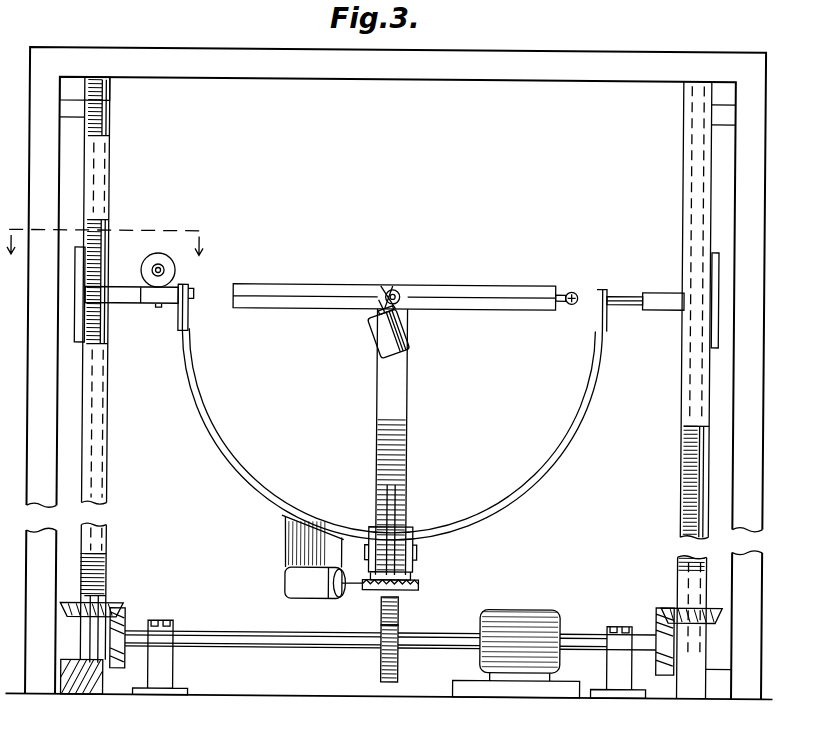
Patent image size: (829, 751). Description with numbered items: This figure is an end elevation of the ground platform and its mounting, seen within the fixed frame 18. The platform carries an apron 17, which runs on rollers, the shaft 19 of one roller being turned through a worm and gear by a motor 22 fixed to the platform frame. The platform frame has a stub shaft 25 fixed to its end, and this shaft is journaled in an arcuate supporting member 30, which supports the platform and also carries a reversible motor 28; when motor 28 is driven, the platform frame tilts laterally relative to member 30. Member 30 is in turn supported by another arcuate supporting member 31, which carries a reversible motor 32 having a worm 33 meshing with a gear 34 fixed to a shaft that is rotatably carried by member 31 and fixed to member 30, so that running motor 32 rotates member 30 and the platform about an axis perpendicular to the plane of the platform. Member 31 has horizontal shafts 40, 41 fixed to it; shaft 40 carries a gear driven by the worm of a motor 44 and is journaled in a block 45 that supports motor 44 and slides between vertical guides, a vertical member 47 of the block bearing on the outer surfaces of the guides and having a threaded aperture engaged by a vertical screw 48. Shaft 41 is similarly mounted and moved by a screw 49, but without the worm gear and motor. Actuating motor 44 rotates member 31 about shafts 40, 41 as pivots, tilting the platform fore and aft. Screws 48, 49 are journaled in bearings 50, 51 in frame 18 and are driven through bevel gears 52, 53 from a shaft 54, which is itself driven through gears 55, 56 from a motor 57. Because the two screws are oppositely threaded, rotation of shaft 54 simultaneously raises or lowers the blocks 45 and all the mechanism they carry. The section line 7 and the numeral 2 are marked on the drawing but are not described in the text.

The threaded shaft 2 is at (396, 481).
The section line 7 is at (104, 233).
The apron 17 is at (76, 324).
The frame 18 is at (36, 150).
The shaft 19 is at (470, 293).
The motor 22 is at (568, 289).
The stub shaft 25 is at (653, 292).
The motor 28 is at (382, 333).
The arcuate supporting member 30 is at (406, 414).
The arcuate supporting member 31 is at (596, 402).
The reversible motor 32 is at (287, 576).
The worm 33 is at (357, 580).
The gear 34 is at (418, 580).
The horizontal shaft 40 is at (183, 310).
The horizontal shaft 41 is at (631, 306).
The motor 44 is at (143, 265).
The block 45 is at (128, 305).
The vertical member 47 is at (718, 278).
The vertical screw 48 is at (107, 233).
The screw 49 is at (686, 440).
The bearing 50 is at (85, 110).
The bearing 51 is at (82, 690).
The bevel gear 52 is at (110, 604).
The bevel gear 53 is at (128, 616).
The shaft 54 is at (230, 633).
The gear 55 is at (380, 650).
The gear 56 is at (383, 606).
The motor 57 is at (522, 612).